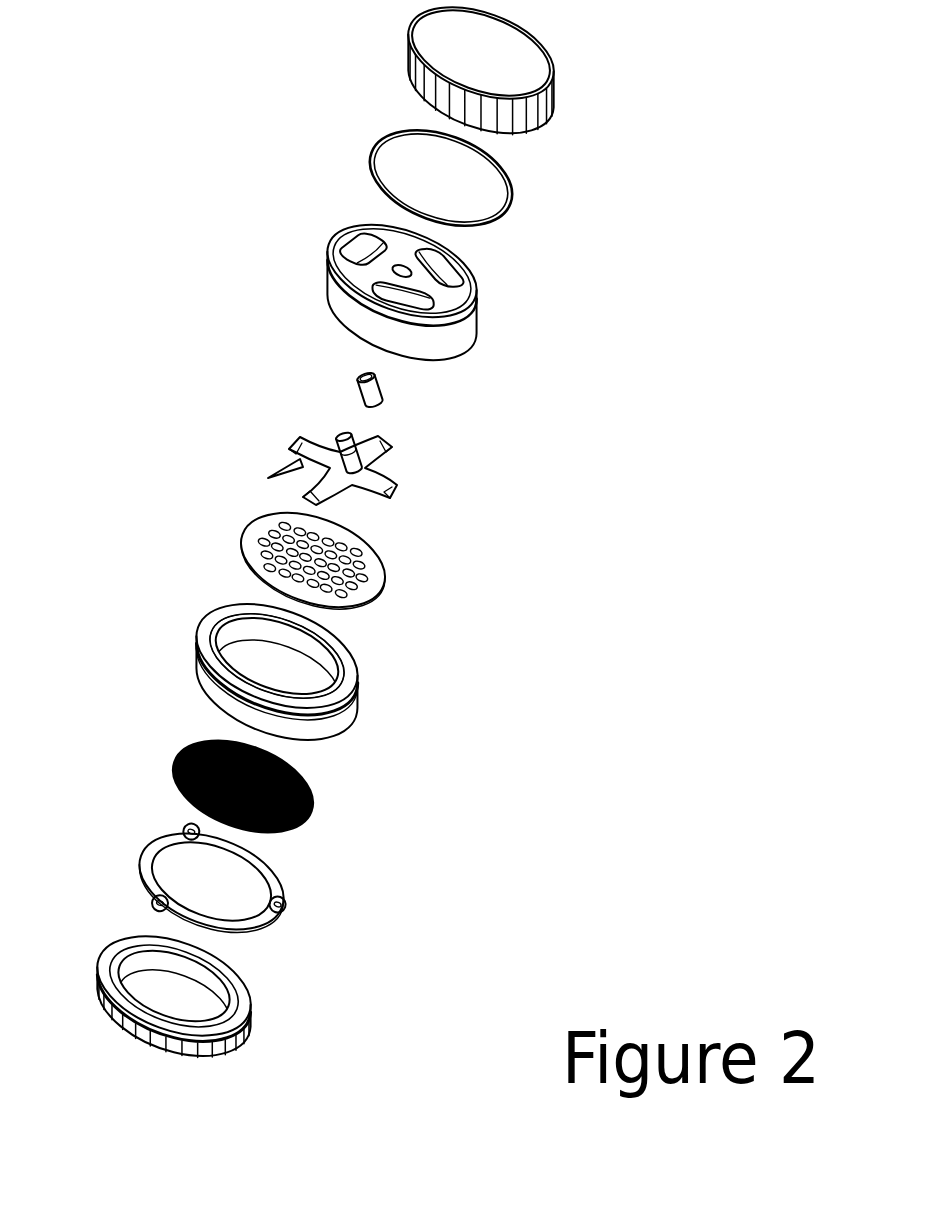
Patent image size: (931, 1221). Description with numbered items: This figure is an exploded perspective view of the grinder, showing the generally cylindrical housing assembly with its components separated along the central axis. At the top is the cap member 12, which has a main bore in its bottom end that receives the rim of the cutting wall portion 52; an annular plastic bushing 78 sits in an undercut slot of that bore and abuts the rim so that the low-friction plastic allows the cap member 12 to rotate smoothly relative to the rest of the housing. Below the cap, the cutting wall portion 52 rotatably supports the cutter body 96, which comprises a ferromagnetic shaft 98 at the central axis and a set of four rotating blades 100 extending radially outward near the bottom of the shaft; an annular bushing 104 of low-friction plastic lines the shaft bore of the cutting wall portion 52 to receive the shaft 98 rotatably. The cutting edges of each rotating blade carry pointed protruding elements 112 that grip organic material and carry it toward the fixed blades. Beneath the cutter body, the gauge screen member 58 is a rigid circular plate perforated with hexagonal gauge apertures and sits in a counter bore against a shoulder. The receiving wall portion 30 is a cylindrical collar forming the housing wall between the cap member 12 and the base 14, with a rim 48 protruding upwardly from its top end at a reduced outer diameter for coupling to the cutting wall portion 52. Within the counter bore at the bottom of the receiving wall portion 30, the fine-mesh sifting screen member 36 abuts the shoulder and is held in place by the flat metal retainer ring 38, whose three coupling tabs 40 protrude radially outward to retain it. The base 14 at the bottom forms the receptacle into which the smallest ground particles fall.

The cap member 12 is at (553, 94).
The annular plastic bushing 78 is at (511, 203).
The cutting wall portion 52 is at (484, 302).
The annular bushing 104 is at (374, 394).
The rotating blades 100 is at (318, 452).
The shaft 98 is at (354, 466).
The cutter body 96 is at (380, 485).
The protruding elements 112 is at (265, 479).
The gauge screen member 58 is at (390, 583).
The rim 48 is at (344, 657).
The receiving wall portion 30 is at (340, 716).
The sifting screen member 36 is at (314, 797).
The retainer ring 38 is at (282, 886).
The coupling tabs 40 is at (186, 835).
The base 14 is at (253, 1010).